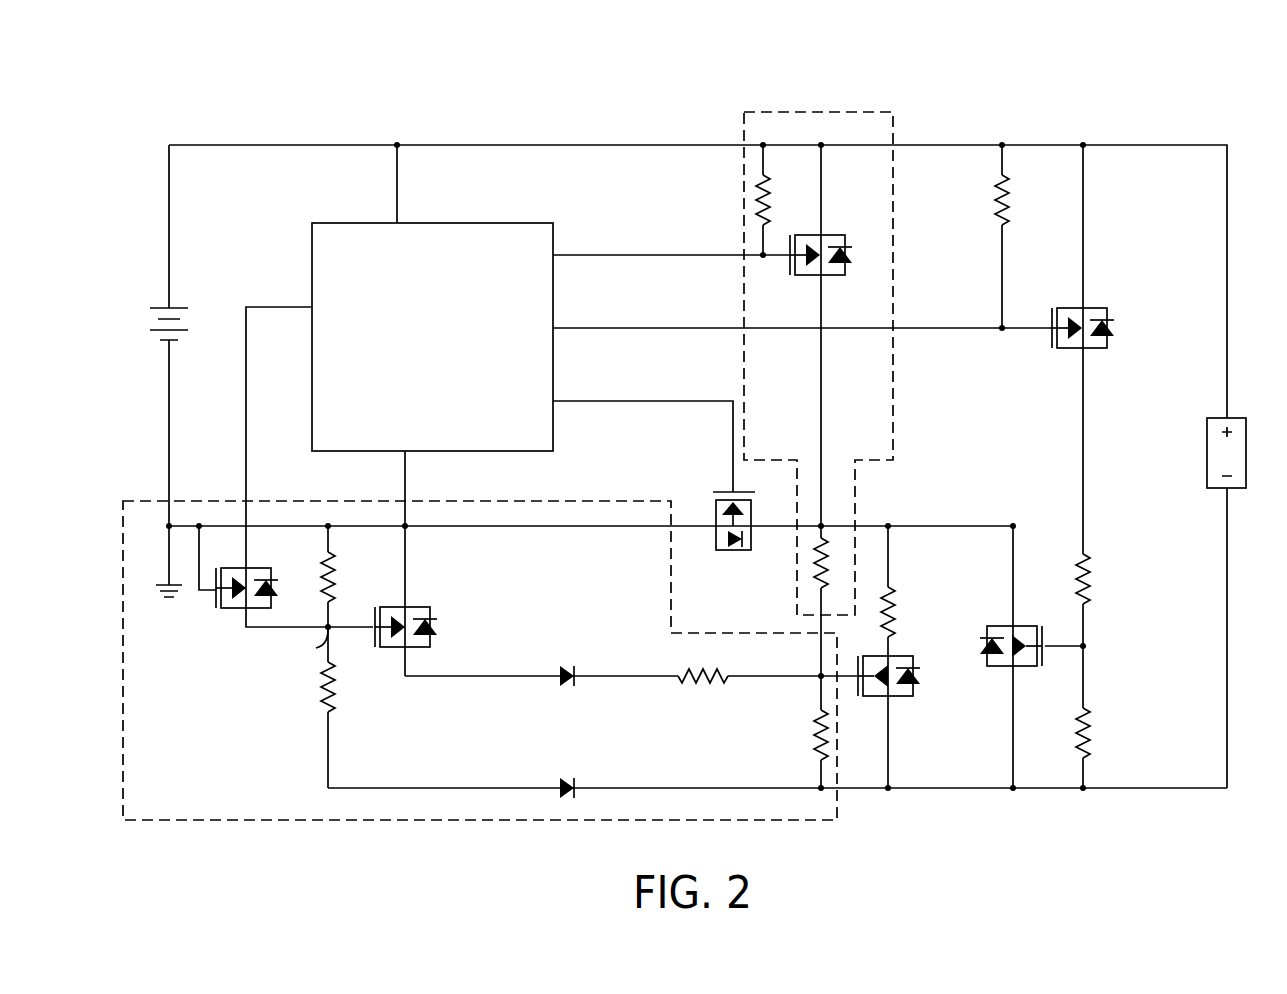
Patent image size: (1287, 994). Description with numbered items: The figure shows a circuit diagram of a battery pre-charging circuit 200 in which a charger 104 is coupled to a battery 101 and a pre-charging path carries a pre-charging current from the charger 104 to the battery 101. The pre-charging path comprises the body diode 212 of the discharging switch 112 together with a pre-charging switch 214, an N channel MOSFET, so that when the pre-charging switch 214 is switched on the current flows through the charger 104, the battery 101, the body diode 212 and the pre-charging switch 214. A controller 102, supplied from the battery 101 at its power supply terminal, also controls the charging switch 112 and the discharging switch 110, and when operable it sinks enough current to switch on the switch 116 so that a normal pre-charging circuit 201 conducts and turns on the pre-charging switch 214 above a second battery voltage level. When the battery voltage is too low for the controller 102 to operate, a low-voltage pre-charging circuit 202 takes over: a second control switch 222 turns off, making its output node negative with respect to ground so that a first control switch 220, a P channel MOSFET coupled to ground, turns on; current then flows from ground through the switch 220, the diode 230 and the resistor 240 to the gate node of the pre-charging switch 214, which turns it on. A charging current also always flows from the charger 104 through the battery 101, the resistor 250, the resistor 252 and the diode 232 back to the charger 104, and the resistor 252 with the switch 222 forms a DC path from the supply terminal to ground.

The battery pre-charging circuit 200 is at (116, 115).
The battery 101 is at (172, 308).
The controller 102 is at (480, 222).
The charger 104 is at (1228, 418).
The discharging switch 110 is at (1020, 628).
The discharging switch 112 is at (727, 493).
The switch 116 is at (830, 235).
The normal pre-charging circuit 201 is at (907, 214).
The low-voltage pre-charging circuit 202 is at (254, 820).
The body diode 212 is at (730, 551).
The pre-charging switch 214 is at (895, 655).
The first control switch 220 is at (410, 608).
The second control switch 222 is at (250, 569).
The diode 230 is at (563, 668).
The diode 232 is at (563, 780).
The resistor 240 is at (690, 668).
The resistor 250 is at (347, 573).
The resistor 252 is at (347, 681).